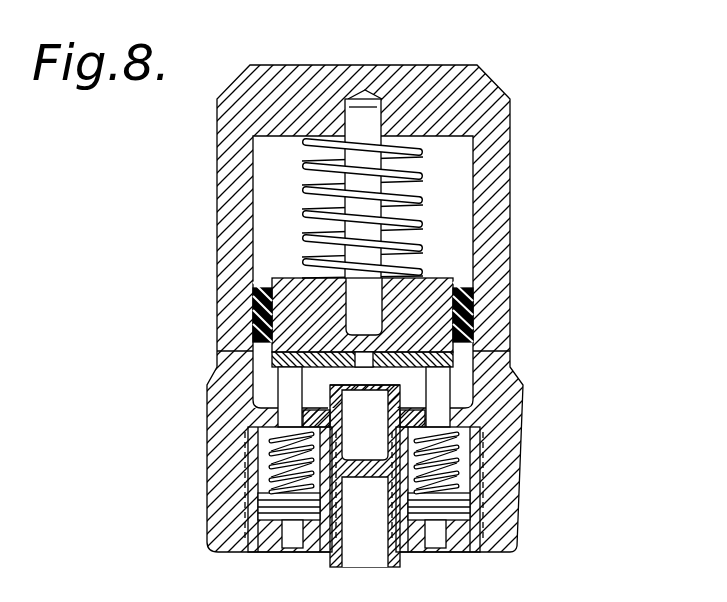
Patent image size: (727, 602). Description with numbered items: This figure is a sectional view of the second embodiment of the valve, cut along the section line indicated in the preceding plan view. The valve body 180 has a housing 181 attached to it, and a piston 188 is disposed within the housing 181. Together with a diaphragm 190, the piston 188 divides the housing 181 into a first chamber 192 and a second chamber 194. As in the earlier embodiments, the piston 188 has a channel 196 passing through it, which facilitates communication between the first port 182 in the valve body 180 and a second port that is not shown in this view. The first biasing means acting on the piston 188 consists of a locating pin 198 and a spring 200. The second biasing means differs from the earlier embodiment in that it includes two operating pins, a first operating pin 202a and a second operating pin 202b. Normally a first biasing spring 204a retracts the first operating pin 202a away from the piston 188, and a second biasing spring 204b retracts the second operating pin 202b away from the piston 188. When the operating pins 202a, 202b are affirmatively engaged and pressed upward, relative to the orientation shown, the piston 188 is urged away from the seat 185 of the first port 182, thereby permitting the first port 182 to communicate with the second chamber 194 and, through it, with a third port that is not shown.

The valve body 180 is at (513, 374).
The housing 181 is at (508, 229).
The first port 182 is at (368, 545).
The seat 185 is at (400, 393).
The piston 188 is at (305, 307).
The diaphragm 190 is at (258, 330).
The first chamber 192 is at (278, 204).
The second chamber 194 is at (265, 393).
The channel 196 is at (473, 299).
The locating pin 198 is at (350, 117).
The spring 200 is at (438, 153).
The first operating pin 202a is at (445, 530).
The second operating pin 202b is at (293, 533).
The first biasing spring 204a is at (446, 464).
The second biasing spring 204b is at (283, 462).